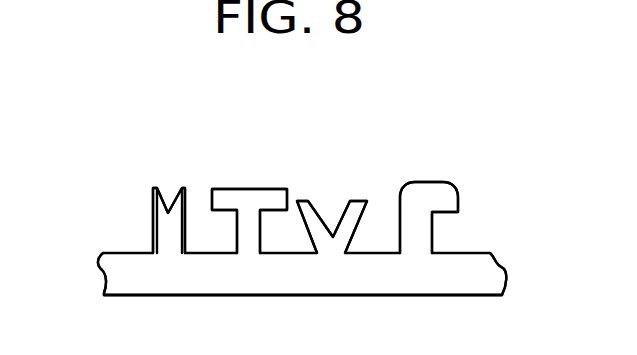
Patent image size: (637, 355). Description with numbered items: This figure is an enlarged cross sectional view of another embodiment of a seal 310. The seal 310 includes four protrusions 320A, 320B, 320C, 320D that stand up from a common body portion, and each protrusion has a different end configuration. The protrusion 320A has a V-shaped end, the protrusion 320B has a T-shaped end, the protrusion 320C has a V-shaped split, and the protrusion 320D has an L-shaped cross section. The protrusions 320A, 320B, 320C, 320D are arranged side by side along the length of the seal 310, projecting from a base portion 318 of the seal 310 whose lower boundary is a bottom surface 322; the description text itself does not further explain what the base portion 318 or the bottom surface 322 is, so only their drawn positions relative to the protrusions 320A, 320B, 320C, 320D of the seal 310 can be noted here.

The seal 310 is at (408, 99).
The base 318 is at (128, 251).
The protrusion 320A is at (157, 212).
The protrusion 320B is at (245, 195).
The protrusion 320C is at (312, 203).
The protrusion 320D is at (430, 198).
The bottom surface 322 is at (315, 282).